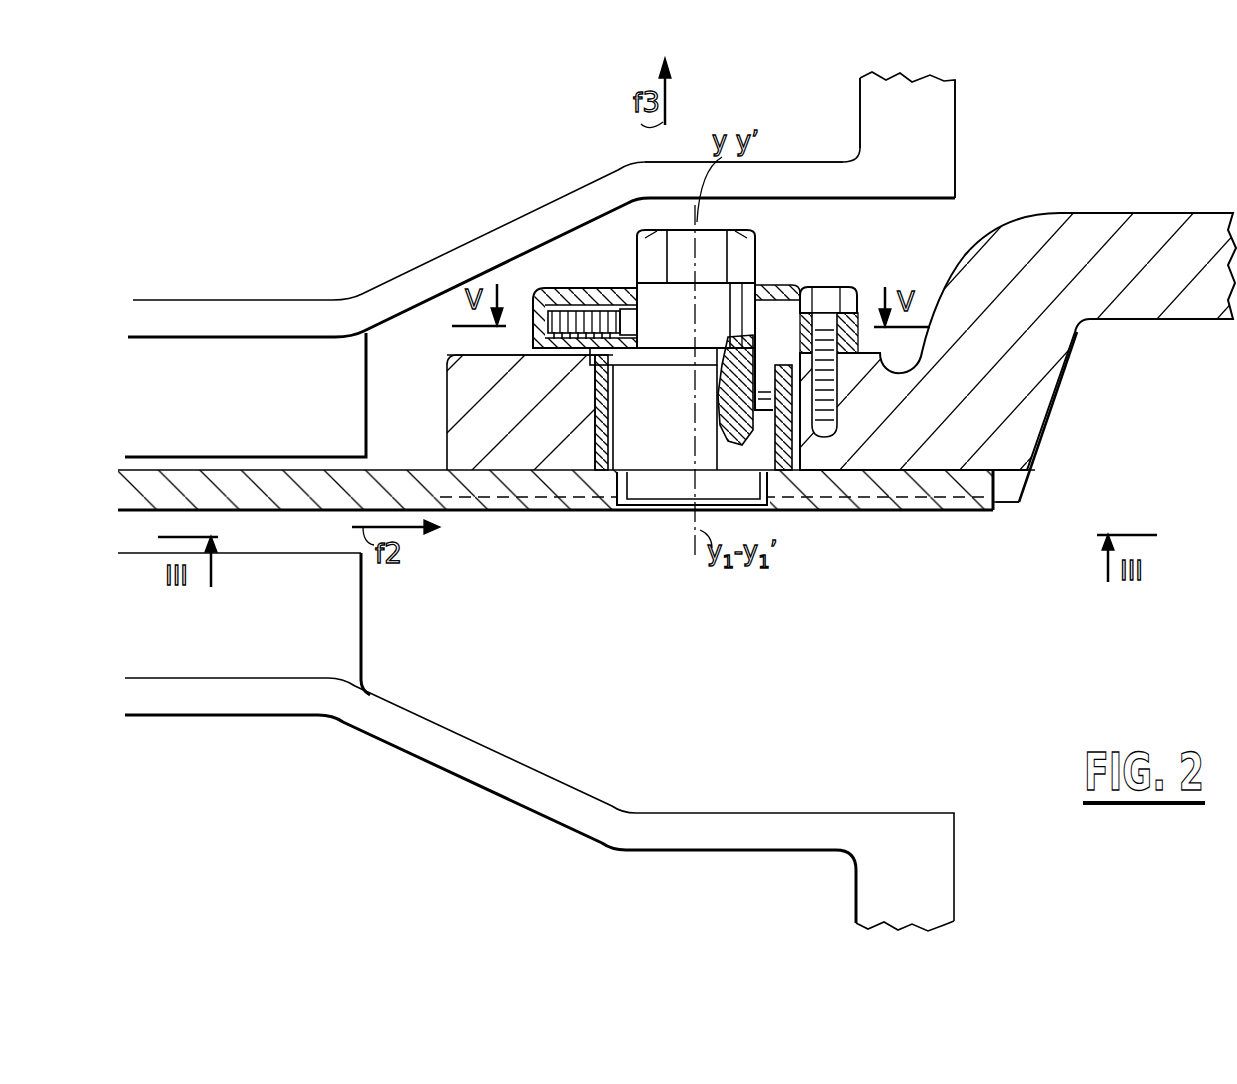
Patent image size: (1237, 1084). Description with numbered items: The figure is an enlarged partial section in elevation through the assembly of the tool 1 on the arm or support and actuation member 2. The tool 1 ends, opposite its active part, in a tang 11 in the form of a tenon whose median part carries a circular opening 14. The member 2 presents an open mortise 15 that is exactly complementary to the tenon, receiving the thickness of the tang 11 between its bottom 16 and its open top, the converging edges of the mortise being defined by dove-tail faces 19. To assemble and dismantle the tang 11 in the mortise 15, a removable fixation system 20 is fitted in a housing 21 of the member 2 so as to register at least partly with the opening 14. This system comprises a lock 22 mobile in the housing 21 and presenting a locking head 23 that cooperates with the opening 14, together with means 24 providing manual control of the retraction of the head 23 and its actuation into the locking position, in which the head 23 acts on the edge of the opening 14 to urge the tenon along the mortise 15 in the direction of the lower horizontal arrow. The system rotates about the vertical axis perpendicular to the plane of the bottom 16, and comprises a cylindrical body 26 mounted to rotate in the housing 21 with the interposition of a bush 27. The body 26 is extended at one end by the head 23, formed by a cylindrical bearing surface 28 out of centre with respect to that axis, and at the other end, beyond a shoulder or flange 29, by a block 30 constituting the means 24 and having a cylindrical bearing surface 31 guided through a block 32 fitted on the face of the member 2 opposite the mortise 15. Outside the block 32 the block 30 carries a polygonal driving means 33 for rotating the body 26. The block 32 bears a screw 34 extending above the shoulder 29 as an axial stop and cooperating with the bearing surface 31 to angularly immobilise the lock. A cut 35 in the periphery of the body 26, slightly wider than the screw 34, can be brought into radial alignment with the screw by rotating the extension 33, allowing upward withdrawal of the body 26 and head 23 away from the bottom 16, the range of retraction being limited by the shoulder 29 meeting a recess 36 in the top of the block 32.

The tool 1 is at (215, 488).
The arm or support and actuation member 2 is at (1160, 213).
The tang 11 is at (975, 488).
The opening 14 is at (618, 488).
The open mortise 15 is at (1008, 482).
The bottom of the mortise 16 is at (1040, 437).
The faces 19 is at (1008, 492).
The removable fixation system 20 is at (687, 150).
The housing 21 is at (585, 381).
The lock 22 is at (585, 468).
The locking head 23 is at (649, 513).
The means for manual control and actuation 24 is at (770, 222).
The cylindrical body 26 is at (676, 490).
The lining, ring or bush 27 is at (592, 402).
The cylindrical bearing surface 28 is at (768, 500).
The shoulder or flange 29 is at (631, 357).
The block 30 is at (712, 310).
The cylindrical bearing surface 31 is at (652, 295).
The block 32 is at (541, 285).
The driving means 33 is at (679, 243).
The locking means (screw) 34 is at (572, 300).
The cut 35 is at (768, 397).
The recess 36 is at (790, 283).